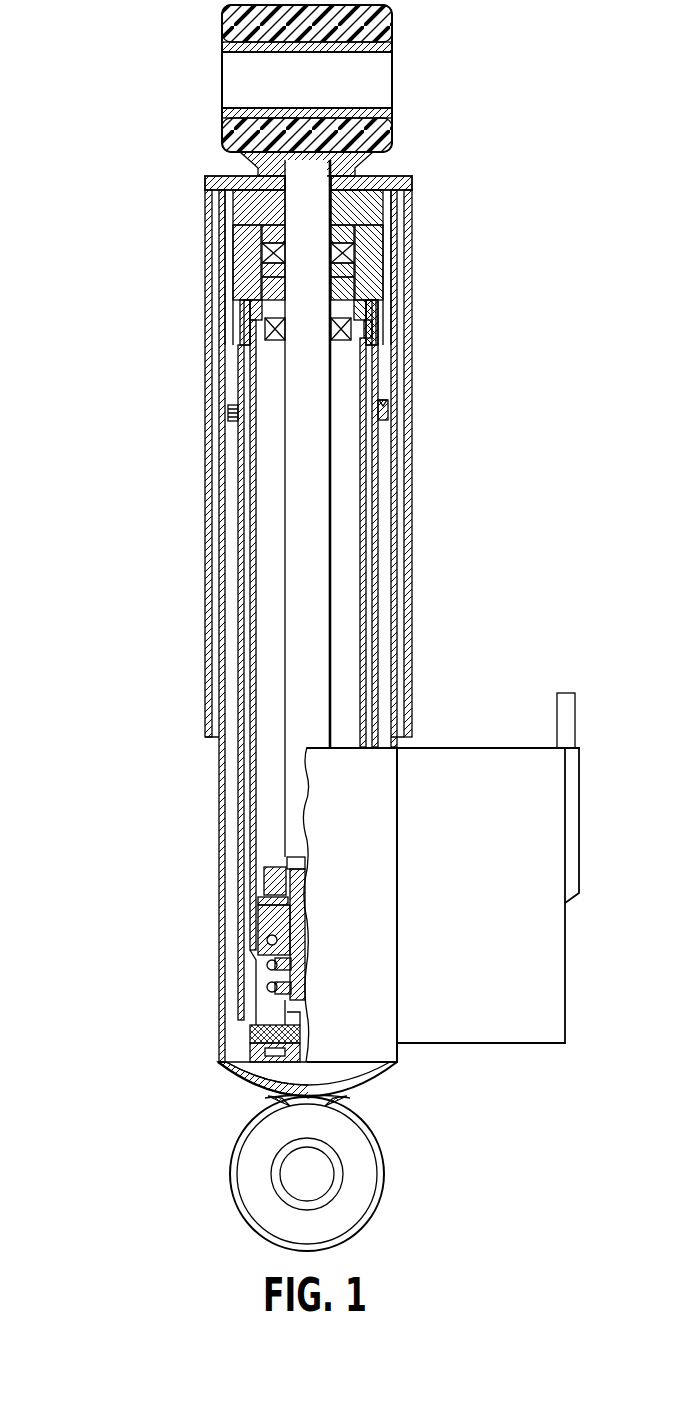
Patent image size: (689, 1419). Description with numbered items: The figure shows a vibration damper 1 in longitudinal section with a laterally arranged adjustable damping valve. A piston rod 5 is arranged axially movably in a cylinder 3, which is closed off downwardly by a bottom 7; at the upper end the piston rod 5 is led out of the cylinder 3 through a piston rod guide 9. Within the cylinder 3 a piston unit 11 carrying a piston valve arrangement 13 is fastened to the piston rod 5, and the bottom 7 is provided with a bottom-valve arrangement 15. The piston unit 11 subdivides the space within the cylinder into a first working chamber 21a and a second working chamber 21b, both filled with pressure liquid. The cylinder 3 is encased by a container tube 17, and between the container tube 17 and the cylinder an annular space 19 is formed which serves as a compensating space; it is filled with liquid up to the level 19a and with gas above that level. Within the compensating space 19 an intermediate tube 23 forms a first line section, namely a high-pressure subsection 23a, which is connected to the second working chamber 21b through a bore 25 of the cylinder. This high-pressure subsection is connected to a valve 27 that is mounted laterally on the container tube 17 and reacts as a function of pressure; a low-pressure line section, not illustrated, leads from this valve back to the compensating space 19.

The vibration damper 1 is at (95, 818).
The cylinder 3 is at (365, 572).
The piston rod 5 is at (317, 465).
The bottom 7 is at (228, 1068).
The piston rod guide 9 is at (372, 283).
The piston unit 11 is at (277, 877).
The piston valve arrangement 13 is at (268, 943).
The bottom-valve arrangement 15 is at (270, 1023).
The container tube 17 is at (397, 345).
The annular space 19 is at (382, 527).
The level 19a is at (228, 405).
The first working chamber 21a is at (265, 990).
The second working chamber 21b is at (270, 555).
The intermediate tube 23 is at (375, 662).
The high-pressure subsection 23a is at (370, 357).
The bore 25 is at (252, 360).
The valve 27 is at (483, 745).